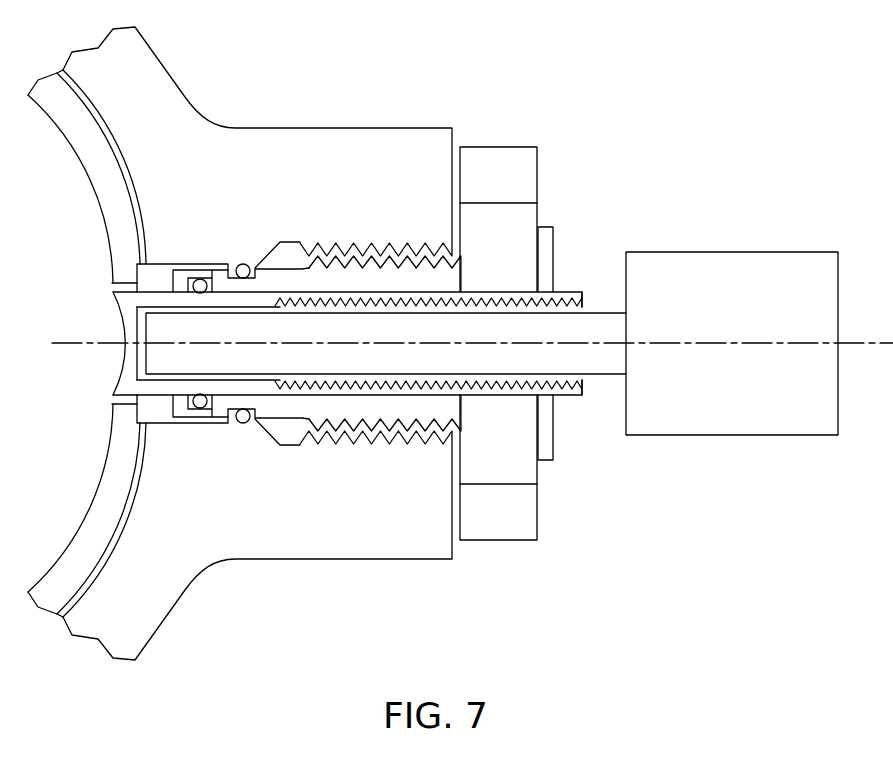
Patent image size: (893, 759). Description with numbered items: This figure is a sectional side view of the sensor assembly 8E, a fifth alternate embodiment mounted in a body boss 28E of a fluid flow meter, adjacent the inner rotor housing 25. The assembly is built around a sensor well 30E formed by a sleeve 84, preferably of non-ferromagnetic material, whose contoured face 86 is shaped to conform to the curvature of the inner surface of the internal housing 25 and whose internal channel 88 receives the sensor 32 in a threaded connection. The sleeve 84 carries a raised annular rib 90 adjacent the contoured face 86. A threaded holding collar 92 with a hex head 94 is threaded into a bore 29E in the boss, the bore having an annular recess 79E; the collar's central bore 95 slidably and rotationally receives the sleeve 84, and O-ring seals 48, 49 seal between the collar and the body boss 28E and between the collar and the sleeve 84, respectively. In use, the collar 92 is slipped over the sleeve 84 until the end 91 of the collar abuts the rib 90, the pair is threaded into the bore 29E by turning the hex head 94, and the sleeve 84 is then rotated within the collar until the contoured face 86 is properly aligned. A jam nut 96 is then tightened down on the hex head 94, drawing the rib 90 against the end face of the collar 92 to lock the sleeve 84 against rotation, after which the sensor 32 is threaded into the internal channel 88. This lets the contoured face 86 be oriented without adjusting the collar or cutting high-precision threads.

The sensor assembly 8E is at (513, 547).
The inner rotor housing 25 is at (50, 606).
The body boss 28E is at (208, 562).
The bore 29E is at (357, 266).
The sensor well 30E is at (577, 286).
The sensor 32 is at (603, 332).
The O-ring seal 48 is at (241, 262).
The O-ring seal 49 is at (200, 279).
The annular recess 79E is at (296, 434).
The sleeve 84 is at (486, 292).
The contoured face 86 is at (123, 333).
The internal channel 88 is at (258, 378).
The annular rib 90 is at (145, 409).
The end of the collar 91 is at (173, 288).
The holding collar 92 is at (527, 155).
The hex head 94 is at (487, 203).
The central bore 95 is at (255, 312).
The jam nut 96 is at (547, 227).